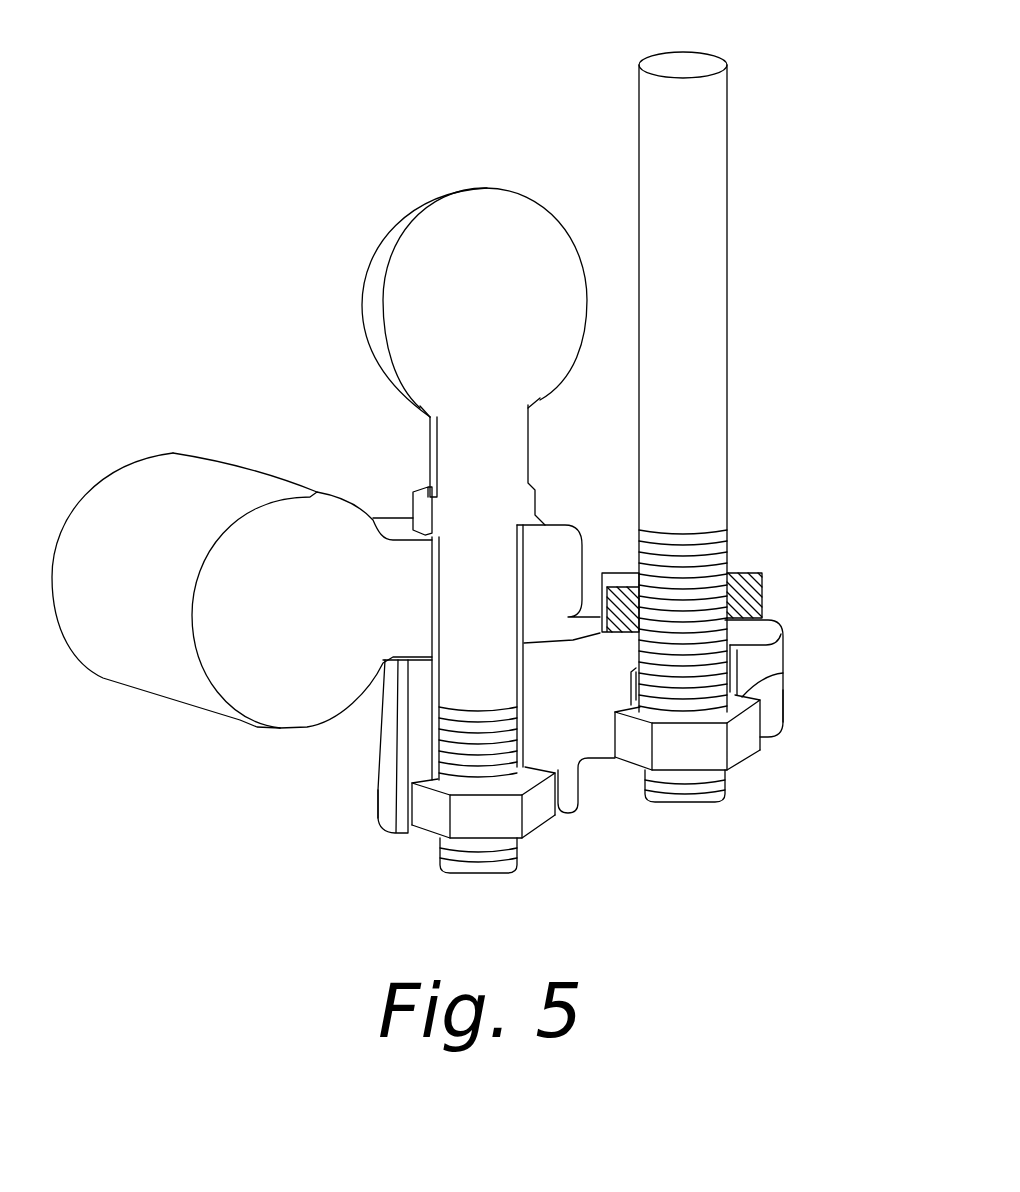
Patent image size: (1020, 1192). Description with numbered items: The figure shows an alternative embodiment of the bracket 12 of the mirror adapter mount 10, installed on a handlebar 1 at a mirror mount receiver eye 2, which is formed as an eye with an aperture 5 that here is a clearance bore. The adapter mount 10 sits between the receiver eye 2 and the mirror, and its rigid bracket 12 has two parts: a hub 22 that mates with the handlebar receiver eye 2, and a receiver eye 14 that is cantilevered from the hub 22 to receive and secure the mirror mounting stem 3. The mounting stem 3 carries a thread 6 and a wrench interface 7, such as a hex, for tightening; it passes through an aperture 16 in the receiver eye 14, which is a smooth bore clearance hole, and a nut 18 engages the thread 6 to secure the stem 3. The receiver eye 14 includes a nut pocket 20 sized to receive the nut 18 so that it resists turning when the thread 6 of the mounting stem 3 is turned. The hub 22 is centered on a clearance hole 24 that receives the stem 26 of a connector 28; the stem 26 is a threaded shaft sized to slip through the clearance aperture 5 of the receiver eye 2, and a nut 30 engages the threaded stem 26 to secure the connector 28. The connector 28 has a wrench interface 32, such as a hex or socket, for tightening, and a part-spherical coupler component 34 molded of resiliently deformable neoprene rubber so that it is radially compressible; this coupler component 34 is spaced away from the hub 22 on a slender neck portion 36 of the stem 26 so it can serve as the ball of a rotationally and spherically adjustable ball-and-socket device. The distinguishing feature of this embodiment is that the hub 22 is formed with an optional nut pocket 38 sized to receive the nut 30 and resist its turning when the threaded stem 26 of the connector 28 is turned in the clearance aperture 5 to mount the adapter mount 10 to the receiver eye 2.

The handlebar 1 is at (102, 473).
The mirror mount receiver eye 2 is at (548, 517).
The mirror mounting stem 3 is at (698, 62).
The aperture 5 is at (525, 568).
The thread 6 is at (713, 800).
The wrench interface 7 is at (765, 592).
The mirror adapter mount 10 is at (707, 836).
The bracket 12 is at (583, 785).
The receiver eye 14 is at (787, 695).
The aperture 16 is at (778, 633).
The nut 18 is at (758, 748).
The nut pocket 20 is at (785, 673).
The hub 22 is at (383, 822).
The clearance hole 24 is at (433, 718).
The stem 26 is at (508, 870).
The connector 28 is at (553, 210).
The nut 30 is at (548, 820).
The wrench interface 32 is at (412, 500).
The part-spherical coupler component 34 is at (392, 237).
The slender neck portion 36 is at (428, 462).
The nut pocket 38 is at (405, 798).